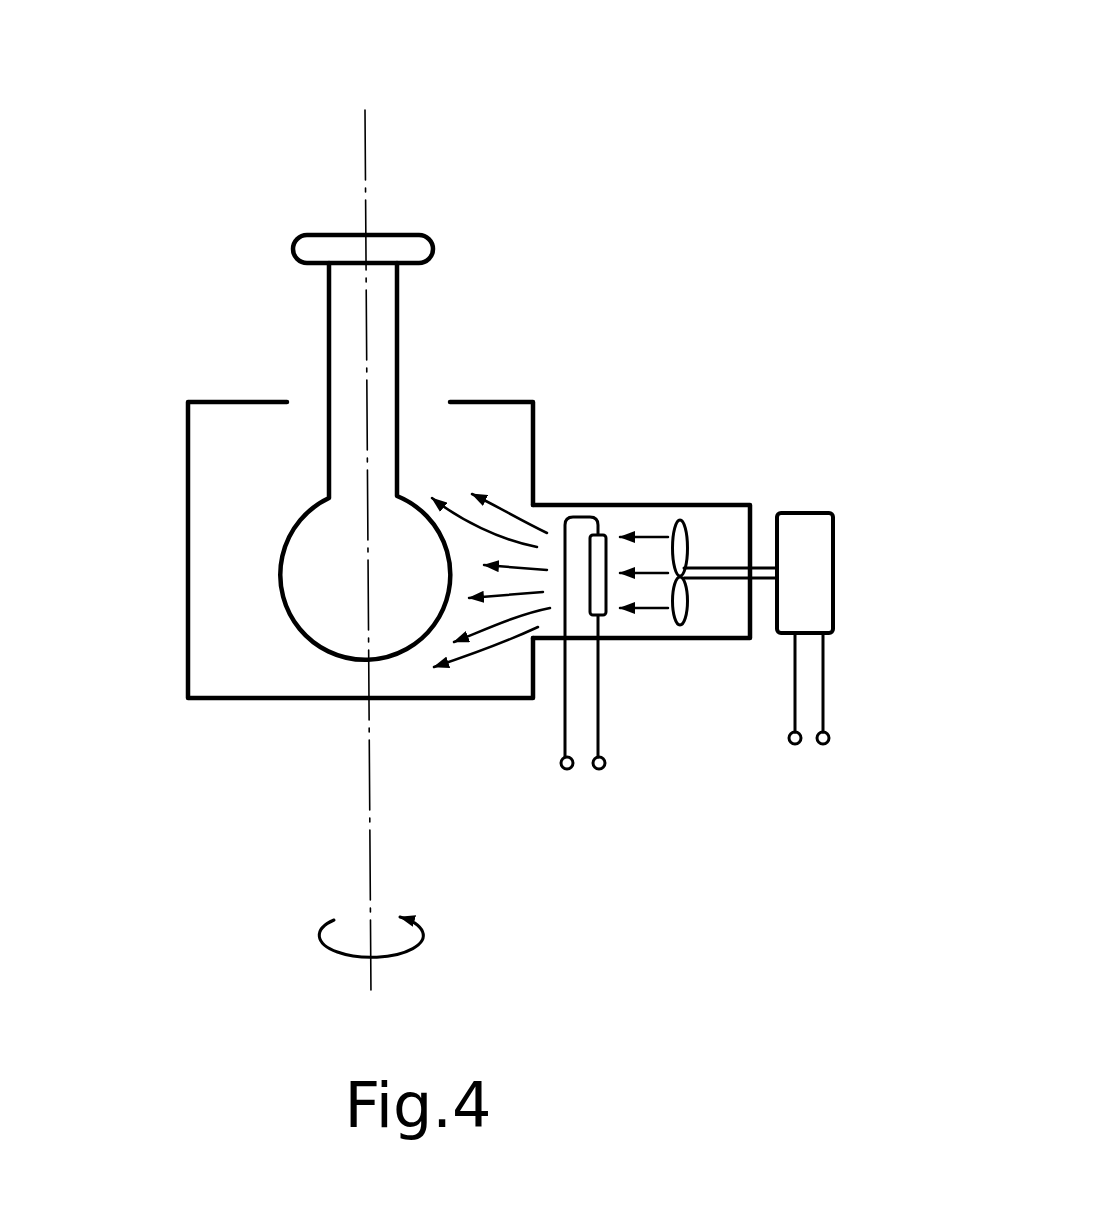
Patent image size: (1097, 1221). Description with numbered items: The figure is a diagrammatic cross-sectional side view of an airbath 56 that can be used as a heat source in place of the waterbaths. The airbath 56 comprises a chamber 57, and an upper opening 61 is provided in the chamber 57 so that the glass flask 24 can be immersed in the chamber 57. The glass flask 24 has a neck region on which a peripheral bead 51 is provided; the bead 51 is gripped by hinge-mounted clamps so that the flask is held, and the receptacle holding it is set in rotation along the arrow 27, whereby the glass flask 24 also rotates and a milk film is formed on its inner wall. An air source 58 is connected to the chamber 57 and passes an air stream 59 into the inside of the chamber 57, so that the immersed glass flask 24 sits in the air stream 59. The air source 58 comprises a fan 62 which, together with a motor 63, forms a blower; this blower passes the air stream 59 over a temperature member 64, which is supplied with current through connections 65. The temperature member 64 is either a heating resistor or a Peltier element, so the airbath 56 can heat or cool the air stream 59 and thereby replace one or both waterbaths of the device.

The glass flask 24 is at (293, 615).
The arrow 27 is at (417, 947).
The peripheral bead 51 is at (410, 235).
The airbath 56 is at (615, 172).
The chamber 57 is at (498, 395).
The air source 58 is at (733, 470).
The air stream 59 is at (515, 602).
The upper opening 61 is at (303, 427).
The fan 62 is at (693, 608).
The motor 63 is at (808, 530).
The temperature member 64 is at (607, 562).
The connections 65 is at (583, 753).